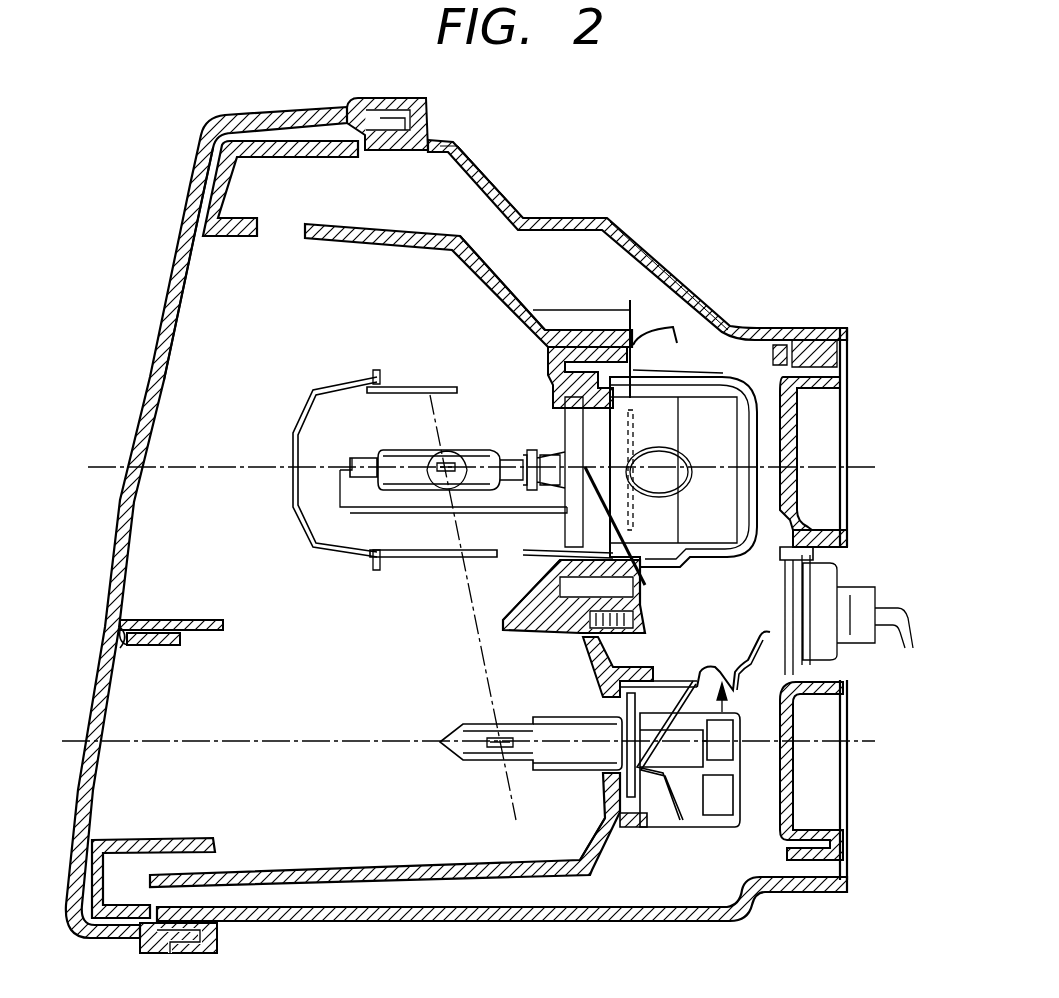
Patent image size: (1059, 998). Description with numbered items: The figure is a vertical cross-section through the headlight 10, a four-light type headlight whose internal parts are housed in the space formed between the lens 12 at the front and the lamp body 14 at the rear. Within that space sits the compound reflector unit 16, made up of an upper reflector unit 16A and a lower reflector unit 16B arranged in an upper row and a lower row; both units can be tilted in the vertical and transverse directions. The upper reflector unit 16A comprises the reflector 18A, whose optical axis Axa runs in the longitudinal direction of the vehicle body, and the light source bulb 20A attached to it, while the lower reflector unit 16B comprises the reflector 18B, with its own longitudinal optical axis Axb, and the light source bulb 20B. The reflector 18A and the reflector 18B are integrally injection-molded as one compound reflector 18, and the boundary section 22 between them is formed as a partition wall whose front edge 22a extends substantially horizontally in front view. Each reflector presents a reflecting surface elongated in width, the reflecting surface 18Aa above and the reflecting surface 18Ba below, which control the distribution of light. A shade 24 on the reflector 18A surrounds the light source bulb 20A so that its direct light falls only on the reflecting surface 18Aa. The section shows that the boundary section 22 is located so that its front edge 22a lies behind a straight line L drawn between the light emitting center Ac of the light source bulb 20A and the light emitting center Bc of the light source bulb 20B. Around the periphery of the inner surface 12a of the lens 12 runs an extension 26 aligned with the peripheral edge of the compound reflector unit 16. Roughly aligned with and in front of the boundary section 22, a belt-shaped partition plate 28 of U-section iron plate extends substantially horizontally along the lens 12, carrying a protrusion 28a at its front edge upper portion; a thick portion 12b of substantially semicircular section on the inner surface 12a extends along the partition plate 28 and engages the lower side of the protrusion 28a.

The headlight 10 is at (608, 138).
The lens 12 is at (160, 290).
The inner surface of the lens 12a is at (170, 378).
The thick portion 12b is at (126, 650).
The lamp body 14 is at (672, 258).
The compound reflector unit 16 is at (170, 535).
The upper reflector unit 16A is at (330, 355).
The lower reflector unit 16B is at (352, 648).
The compound reflector 18 is at (522, 280).
The reflector of the upper reflector unit 18A is at (482, 238).
The reflecting surface of the upper reflector 18Aa is at (482, 290).
The reflector of the lower reflector unit 18B is at (620, 852).
The reflecting surface of the lower reflector 18Ba is at (590, 822).
The light source bulb of the upper reflector unit 20A is at (413, 448).
The light source bulb of the lower reflector unit 20B is at (470, 718).
The boundary section 22 is at (488, 630).
The front edge of the boundary section 22a is at (490, 616).
The shade 24 is at (290, 500).
The extension 26 is at (222, 240).
The partition plate 28 is at (206, 614).
The protrusion 28a is at (128, 620).
The optical axis of the upper reflector Axa is at (228, 462).
The optical axis of the lower reflector Axb is at (244, 736).
The light emitting center of the upper light source bulb Ac is at (462, 442).
The light emitting center of the lower light source bulb Bc is at (510, 722).
The straight line L is at (458, 597).